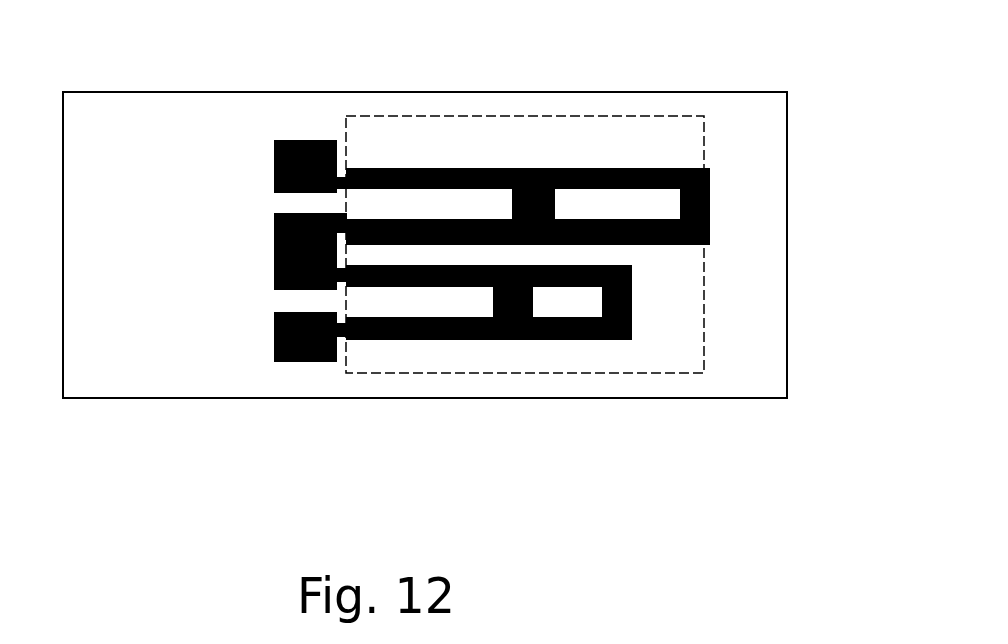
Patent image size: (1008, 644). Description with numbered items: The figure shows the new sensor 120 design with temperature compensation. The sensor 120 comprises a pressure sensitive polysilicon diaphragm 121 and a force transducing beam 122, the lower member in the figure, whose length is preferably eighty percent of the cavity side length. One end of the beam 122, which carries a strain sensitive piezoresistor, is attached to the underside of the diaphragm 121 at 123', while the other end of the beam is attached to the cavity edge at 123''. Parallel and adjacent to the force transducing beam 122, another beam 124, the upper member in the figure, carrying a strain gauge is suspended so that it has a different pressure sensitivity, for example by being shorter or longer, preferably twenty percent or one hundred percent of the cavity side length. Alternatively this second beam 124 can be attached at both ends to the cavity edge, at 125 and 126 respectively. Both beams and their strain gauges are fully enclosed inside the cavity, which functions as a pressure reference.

The sensor 120 is at (178, 435).
The pressure sensitive polysilicon diaphragm 121 is at (655, 347).
The force transducing beam 122 is at (558, 342).
The attachment point to diaphragm underside 123' is at (656, 420).
The attachment point to cavity edge 123'' is at (356, 422).
The second beam 124 is at (670, 245).
The first cavity-edge attachment of second beam 125 is at (355, 162).
The second cavity-edge attachment of second beam 126 is at (693, 162).